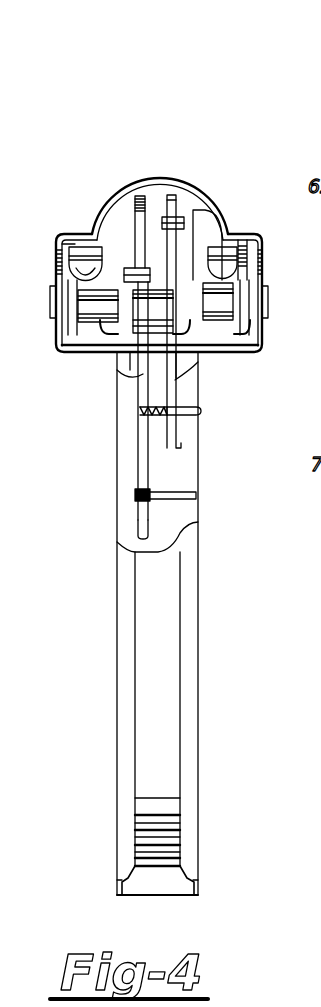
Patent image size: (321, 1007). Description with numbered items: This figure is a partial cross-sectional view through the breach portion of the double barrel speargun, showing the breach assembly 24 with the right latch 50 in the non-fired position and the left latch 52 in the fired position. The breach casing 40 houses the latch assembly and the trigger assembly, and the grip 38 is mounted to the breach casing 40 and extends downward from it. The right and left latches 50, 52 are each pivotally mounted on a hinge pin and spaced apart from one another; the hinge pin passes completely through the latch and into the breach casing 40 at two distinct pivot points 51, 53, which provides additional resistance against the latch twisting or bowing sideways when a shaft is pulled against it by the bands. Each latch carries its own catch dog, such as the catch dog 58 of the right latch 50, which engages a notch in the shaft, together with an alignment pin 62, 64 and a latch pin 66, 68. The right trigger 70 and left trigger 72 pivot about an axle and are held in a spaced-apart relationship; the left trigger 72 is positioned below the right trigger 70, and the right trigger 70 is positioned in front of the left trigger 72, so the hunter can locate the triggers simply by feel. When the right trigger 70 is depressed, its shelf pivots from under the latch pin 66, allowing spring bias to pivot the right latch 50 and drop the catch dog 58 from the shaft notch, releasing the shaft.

The breach assembly 24 is at (250, 114).
The grip 38 is at (193, 697).
The breach casing 40 is at (142, 203).
The right latch 50 is at (217, 240).
The pivot point 51 is at (263, 342).
The left latch 52 is at (110, 250).
The pivot point 53 is at (54, 338).
The catch dog 58 is at (264, 240).
The alignment pin 62 is at (236, 240).
The alignment pin 64 is at (83, 250).
The latch pin 66 is at (197, 228).
The latch pin 68 is at (116, 265).
The right trigger 70 is at (172, 195).
The left trigger 72 is at (134, 258).